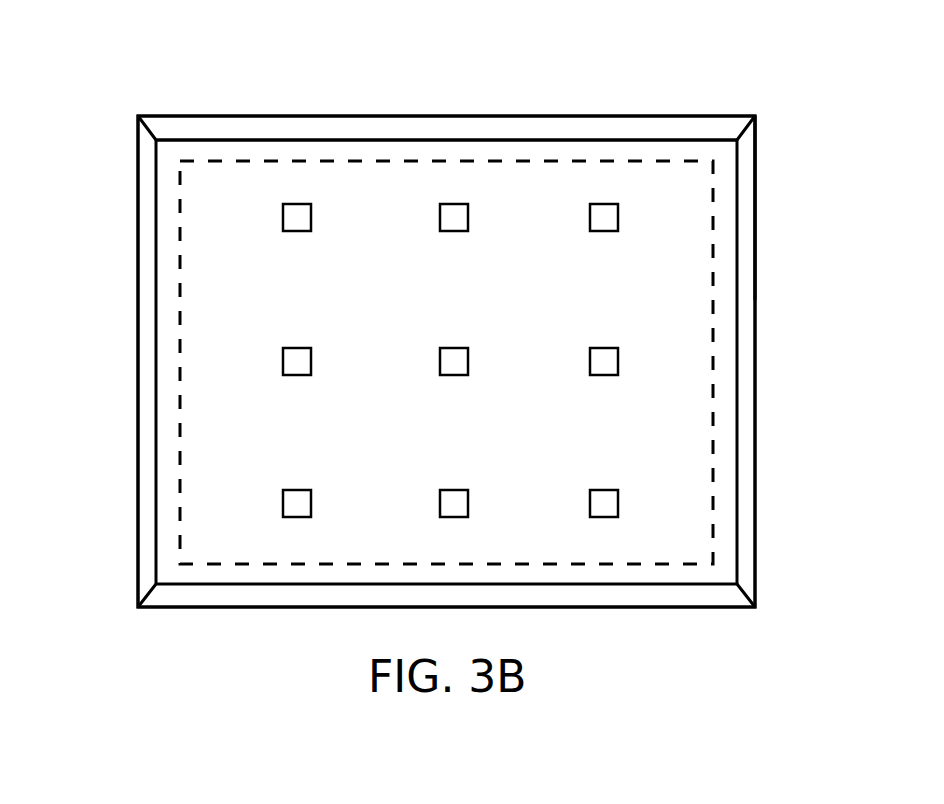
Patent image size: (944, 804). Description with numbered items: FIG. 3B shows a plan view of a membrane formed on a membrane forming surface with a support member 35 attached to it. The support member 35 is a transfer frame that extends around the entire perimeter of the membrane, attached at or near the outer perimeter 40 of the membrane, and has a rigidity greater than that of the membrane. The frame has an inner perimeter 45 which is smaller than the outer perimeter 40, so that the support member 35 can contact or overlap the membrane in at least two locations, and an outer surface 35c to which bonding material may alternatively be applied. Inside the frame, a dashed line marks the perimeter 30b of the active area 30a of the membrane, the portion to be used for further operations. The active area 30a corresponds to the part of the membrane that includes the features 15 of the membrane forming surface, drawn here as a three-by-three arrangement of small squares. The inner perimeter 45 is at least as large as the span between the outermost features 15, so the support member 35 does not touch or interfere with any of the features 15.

The features 15 is at (291, 225).
The active area 30a is at (648, 292).
The perimeter of active area 30b is at (627, 160).
The support member 35 is at (193, 128).
The outer surface 35c is at (760, 152).
The outer perimeter 40 is at (757, 388).
The inner perimeter 45 is at (448, 141).